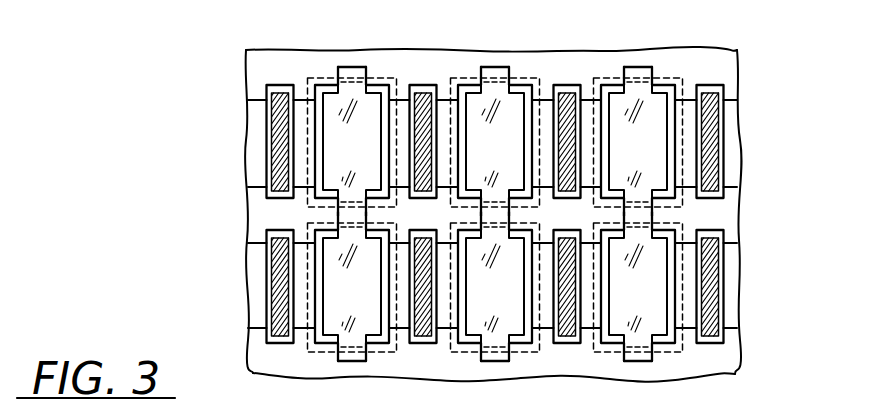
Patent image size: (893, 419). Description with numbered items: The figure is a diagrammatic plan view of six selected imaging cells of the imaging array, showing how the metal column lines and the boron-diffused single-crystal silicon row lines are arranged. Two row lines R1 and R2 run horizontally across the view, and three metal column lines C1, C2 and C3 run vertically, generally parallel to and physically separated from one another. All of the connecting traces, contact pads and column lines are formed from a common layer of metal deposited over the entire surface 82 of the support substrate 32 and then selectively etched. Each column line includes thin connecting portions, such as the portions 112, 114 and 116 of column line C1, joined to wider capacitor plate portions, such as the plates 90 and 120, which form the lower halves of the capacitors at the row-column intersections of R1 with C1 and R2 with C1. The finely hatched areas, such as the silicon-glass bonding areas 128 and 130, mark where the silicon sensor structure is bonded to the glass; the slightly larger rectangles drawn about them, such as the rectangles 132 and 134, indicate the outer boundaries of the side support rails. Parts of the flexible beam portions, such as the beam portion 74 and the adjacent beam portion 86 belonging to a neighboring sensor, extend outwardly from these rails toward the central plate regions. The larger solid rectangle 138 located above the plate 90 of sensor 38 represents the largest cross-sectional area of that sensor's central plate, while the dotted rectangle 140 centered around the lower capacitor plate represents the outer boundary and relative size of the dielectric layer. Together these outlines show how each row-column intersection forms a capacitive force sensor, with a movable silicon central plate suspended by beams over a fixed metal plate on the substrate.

The support substrate 32 is at (676, 383).
The sensor 38 is at (422, 50).
The flexible beam portion 74 is at (302, 182).
The surface 82 is at (717, 356).
The adjacent flexible beam portion 86 is at (255, 168).
The capacitor plate portion 90 is at (368, 146).
The thin connecting portion 112 is at (335, 66).
The thin connecting portion 114 is at (338, 221).
The thin connecting portion 116 is at (369, 360).
The capacitor plate portion 120 is at (373, 293).
The silicon-glass bonding area 128 is at (268, 88).
The silicon-glass bonding area 130 is at (420, 81).
The rail outer boundary rectangle 132 is at (274, 96).
The rail outer boundary rectangle 134 is at (455, 78).
The central plate rectangle 138 is at (325, 81).
The dielectric layer dotted rectangle 140 is at (383, 77).
The row line R1 is at (228, 127).
The row line R2 is at (233, 288).
The column line C1 is at (352, 58).
The column line C2 is at (495, 58).
The column line C3 is at (638, 58).